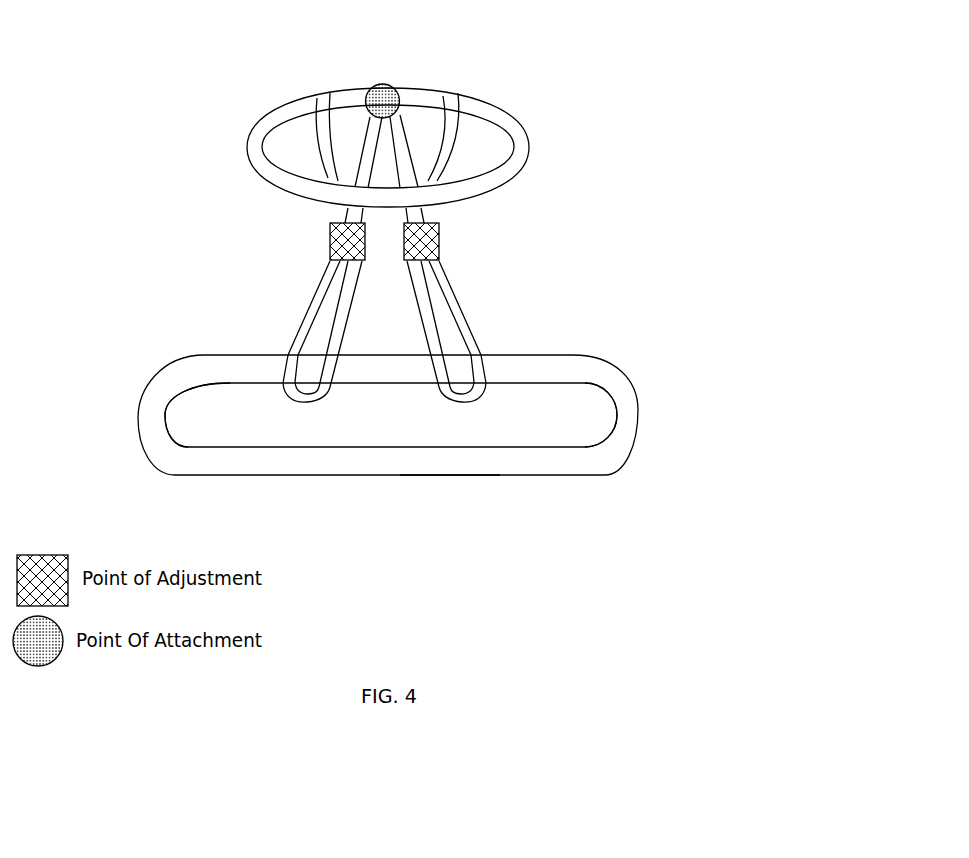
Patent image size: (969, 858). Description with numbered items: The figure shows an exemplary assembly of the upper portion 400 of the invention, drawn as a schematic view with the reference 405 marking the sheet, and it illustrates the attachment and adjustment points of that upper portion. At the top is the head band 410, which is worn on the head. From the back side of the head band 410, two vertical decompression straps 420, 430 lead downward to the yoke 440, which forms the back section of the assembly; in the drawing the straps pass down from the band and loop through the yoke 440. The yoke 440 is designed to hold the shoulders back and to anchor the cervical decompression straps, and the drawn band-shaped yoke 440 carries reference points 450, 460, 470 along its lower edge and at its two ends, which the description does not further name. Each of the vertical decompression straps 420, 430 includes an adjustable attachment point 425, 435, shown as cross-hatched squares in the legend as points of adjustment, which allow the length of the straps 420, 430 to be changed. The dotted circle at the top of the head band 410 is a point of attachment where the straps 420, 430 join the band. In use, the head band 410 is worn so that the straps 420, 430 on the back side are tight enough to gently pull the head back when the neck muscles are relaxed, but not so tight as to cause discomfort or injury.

The upper portion 400 is at (650, 143).
The sheet reference 405 is at (818, 18).
The head band 410 is at (505, 118).
The vertical decompression strap 420 is at (367, 135).
The adjustable attachment point 425 is at (330, 250).
The vertical decompression strap 430 is at (403, 133).
The adjustable attachment point 435 is at (439, 252).
The yoke 440 is at (488, 370).
The belt bottom edge 450 is at (432, 477).
The belt right end 460 is at (595, 412).
The belt left end 470 is at (202, 423).